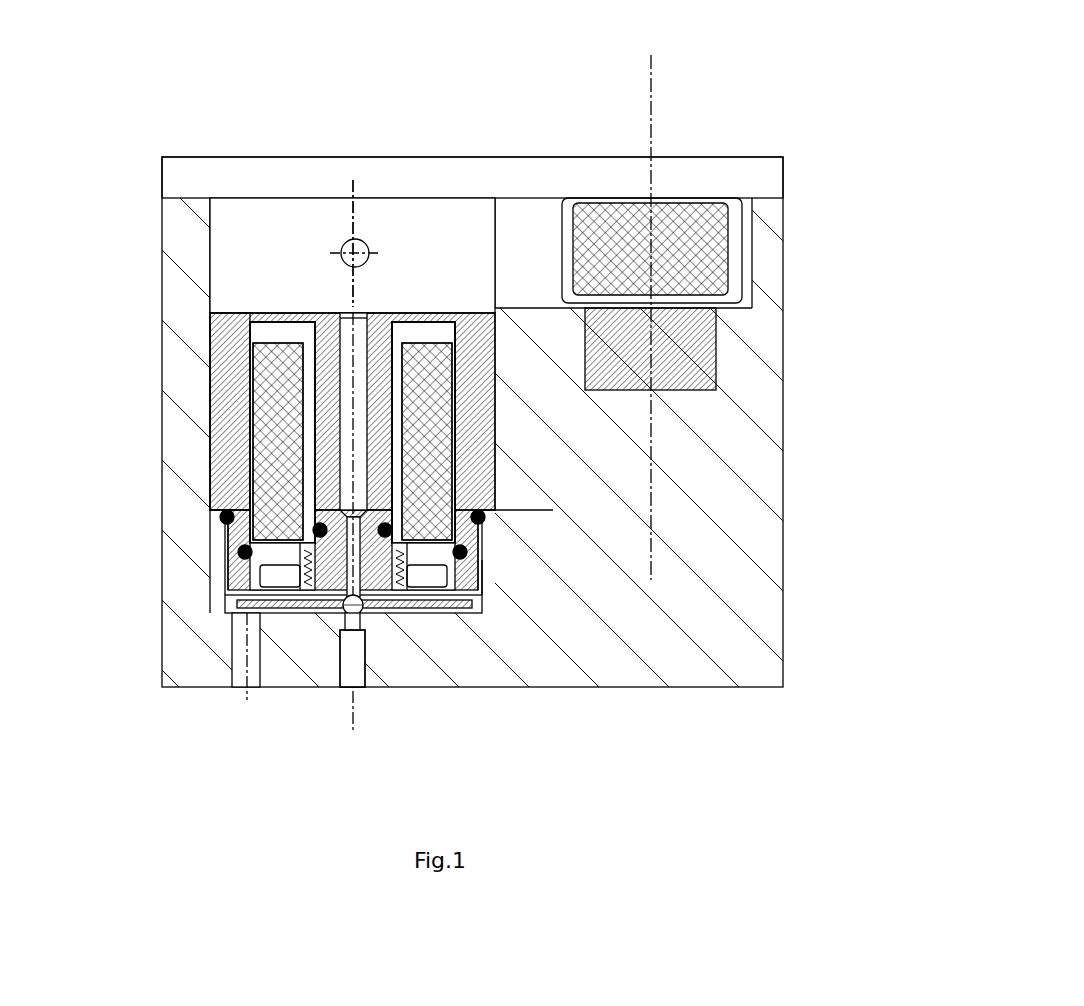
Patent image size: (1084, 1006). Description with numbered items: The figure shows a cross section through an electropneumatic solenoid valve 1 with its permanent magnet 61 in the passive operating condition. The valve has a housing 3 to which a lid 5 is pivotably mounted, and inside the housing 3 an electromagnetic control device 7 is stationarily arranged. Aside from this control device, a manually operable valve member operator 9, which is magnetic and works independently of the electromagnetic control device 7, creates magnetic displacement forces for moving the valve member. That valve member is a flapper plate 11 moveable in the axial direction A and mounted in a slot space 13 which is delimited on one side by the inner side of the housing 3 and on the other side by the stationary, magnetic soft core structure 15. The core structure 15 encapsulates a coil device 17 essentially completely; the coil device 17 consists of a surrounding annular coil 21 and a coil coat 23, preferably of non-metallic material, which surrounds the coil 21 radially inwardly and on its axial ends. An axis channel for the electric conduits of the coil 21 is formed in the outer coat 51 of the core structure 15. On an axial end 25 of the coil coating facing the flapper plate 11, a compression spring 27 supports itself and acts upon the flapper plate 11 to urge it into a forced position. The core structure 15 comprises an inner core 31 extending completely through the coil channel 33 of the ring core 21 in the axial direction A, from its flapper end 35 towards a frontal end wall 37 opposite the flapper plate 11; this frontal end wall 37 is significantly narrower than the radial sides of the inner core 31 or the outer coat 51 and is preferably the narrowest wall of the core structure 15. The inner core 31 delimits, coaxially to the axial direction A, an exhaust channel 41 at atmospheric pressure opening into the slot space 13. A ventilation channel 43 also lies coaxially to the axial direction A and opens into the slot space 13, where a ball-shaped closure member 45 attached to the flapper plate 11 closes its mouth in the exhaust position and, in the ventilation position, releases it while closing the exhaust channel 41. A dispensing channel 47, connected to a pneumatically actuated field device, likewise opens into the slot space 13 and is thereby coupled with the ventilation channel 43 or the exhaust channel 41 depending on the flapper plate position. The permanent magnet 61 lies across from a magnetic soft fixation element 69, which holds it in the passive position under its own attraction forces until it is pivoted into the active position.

The solenoid valve 1 is at (866, 464).
The housing 3 is at (772, 612).
The lid 5 is at (760, 178).
The electromagnetic control device 7 is at (207, 511).
The valve member operator 9 is at (611, 190).
The flapper plate 11 is at (260, 617).
The slot space 13 is at (481, 613).
The core structure 15 is at (363, 611).
The coil device 17 is at (251, 326).
The coil 21 is at (440, 462).
The coil coat 23 is at (443, 337).
The axial end 25 is at (277, 557).
The compression spring 27 is at (282, 613).
The inner core 31 is at (280, 430).
The coil channel 33 is at (387, 392).
The flapper end 35 is at (338, 617).
The frontal end wall 37 is at (293, 312).
The exhaust channel 41 is at (355, 352).
The ventilation channel 43 is at (366, 632).
The closure member 45 is at (367, 660).
The dispensing channel 47 is at (247, 657).
The outer coat 51 is at (232, 448).
The permanent magnet 61 is at (712, 205).
The fixation element 69 is at (715, 352).
The axial direction A is at (365, 215).